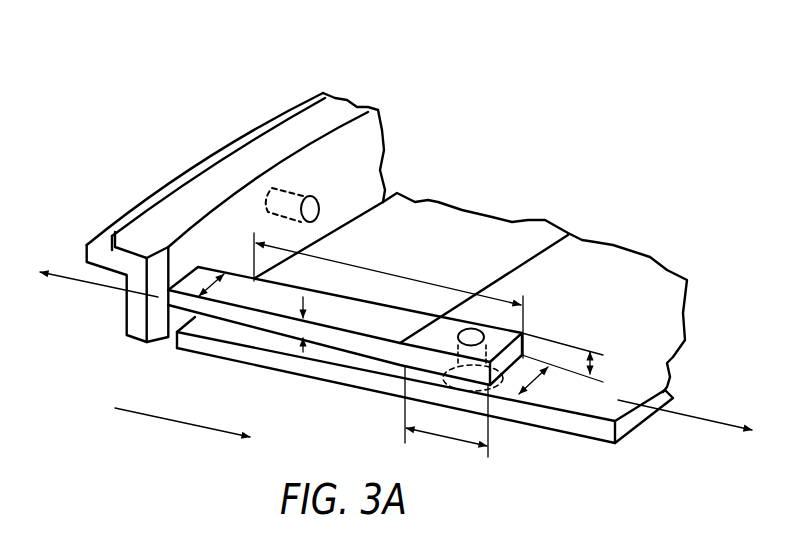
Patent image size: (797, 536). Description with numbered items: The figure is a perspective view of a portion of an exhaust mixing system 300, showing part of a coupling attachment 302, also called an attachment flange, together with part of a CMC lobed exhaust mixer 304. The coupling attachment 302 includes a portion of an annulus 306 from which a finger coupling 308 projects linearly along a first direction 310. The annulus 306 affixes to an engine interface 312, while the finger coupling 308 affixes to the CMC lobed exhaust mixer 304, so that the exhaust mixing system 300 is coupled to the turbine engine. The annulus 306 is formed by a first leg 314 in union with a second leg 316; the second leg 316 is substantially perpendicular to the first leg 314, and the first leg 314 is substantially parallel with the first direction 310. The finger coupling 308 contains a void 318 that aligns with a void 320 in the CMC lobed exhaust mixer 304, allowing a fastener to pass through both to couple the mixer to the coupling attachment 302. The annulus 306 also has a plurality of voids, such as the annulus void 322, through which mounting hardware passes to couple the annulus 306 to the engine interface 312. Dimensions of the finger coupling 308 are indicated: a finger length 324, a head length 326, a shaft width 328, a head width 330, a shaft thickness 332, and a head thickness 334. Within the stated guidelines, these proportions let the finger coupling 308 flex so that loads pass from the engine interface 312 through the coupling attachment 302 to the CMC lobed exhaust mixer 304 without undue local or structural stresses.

The exhaust mixing system 300 is at (592, 96).
The coupling attachment 302 is at (405, 68).
The CMC lobed exhaust mixer 304 is at (636, 298).
The annulus 306 is at (257, 180).
The finger coupling 308 is at (293, 303).
The first direction 310 is at (167, 421).
The engine interface 312 is at (126, 322).
The first leg 314 is at (342, 96).
The second leg 316 is at (387, 124).
The void 318 is at (490, 337).
The void 320 is at (468, 394).
The annulus void 322 is at (332, 210).
The finger length 324 is at (392, 265).
The head length 326 is at (447, 440).
The shaft width 328 is at (203, 283).
The head width 330 is at (561, 379).
The shaft thickness 332 is at (311, 332).
The head thickness 334 is at (593, 365).